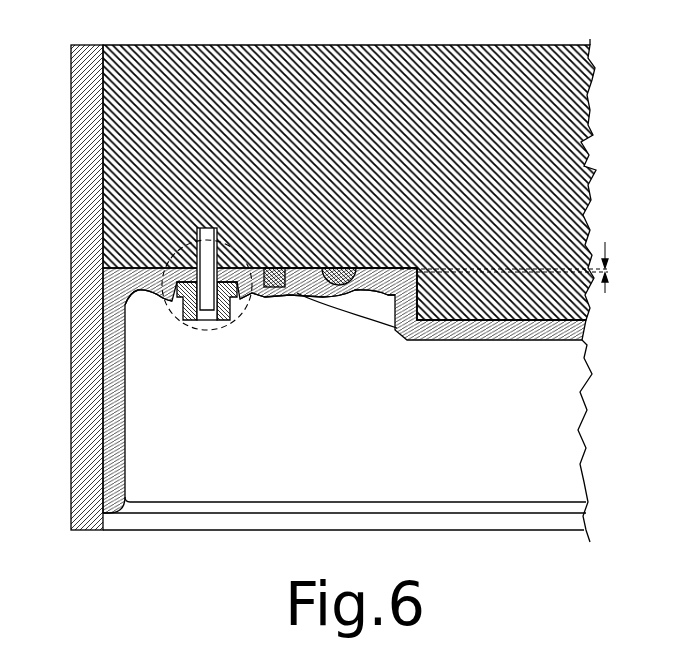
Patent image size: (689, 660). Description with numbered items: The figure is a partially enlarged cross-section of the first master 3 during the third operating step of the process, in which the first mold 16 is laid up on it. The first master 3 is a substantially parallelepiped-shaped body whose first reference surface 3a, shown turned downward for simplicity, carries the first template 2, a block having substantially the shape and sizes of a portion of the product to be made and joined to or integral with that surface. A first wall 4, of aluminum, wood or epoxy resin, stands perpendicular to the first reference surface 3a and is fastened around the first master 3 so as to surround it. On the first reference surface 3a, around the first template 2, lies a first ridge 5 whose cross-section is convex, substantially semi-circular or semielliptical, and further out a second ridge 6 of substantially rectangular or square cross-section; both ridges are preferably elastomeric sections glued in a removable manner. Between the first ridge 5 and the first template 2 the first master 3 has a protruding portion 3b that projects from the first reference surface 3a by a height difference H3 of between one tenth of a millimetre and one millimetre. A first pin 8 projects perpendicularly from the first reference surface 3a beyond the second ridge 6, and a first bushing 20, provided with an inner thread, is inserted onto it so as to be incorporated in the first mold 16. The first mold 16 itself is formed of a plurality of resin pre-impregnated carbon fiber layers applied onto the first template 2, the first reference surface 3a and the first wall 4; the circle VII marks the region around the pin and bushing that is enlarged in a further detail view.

The first template 2 is at (523, 313).
The first master 3 is at (312, 45).
The first reference surface 3a is at (249, 270).
The protruding portion 3b is at (381, 269).
The first wall 4 is at (78, 187).
The first ridge 5 is at (353, 292).
The second ridge 6 is at (340, 285).
The first pin 8 is at (205, 293).
The first mold 16 is at (505, 334).
The first bushing 20 is at (184, 321).
The detail circle VII is at (208, 330).
The height difference H3 is at (653, 281).